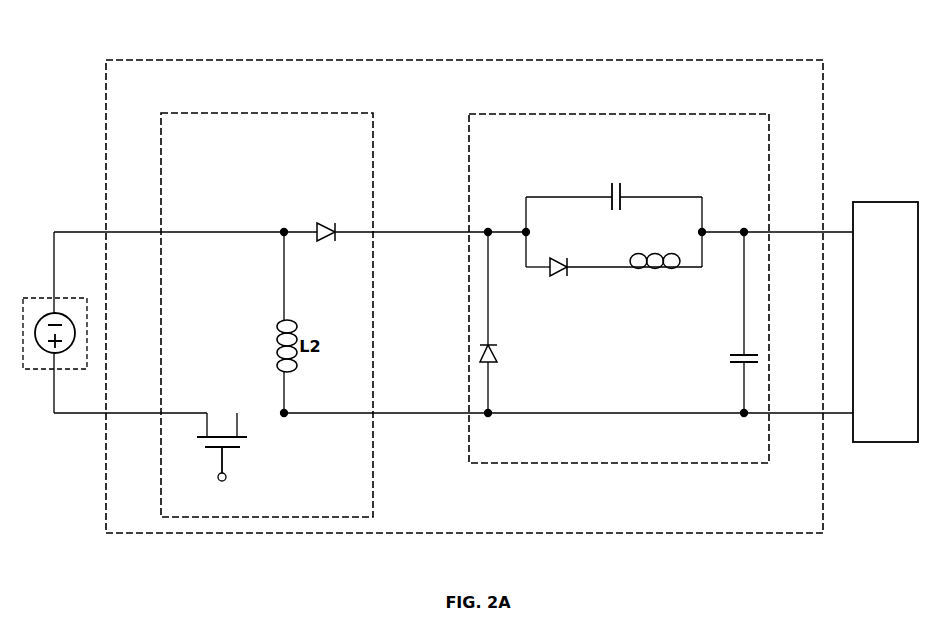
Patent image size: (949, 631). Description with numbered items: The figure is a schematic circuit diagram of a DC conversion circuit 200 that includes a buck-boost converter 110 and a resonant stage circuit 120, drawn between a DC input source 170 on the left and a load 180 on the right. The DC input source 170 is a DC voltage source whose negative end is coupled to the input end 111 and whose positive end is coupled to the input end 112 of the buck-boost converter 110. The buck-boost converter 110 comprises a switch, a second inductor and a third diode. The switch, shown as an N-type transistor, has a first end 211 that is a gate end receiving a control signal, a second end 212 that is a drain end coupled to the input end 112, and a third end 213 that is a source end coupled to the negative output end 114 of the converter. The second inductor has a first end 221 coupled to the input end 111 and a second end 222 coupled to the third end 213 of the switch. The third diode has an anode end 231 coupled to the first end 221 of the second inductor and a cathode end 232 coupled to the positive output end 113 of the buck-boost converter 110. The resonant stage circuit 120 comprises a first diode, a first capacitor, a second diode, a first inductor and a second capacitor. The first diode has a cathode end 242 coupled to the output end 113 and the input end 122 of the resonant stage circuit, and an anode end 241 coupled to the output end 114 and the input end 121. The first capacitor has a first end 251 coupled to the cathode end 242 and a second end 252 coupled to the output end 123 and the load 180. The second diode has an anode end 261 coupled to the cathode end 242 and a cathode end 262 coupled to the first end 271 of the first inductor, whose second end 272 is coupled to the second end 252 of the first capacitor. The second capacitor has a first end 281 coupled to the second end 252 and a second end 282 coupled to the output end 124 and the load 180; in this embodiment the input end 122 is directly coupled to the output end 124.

The DC conversion circuit 200 is at (708, 60).
The buck-boost converter 110 is at (236, 113).
The resonant stage circuit 120 is at (672, 114).
The DC input source 170 is at (40, 298).
The load 180 is at (880, 202).
The input end of the buck-boost converter 111 is at (136, 232).
The input end of the buck-boost converter 112 is at (138, 413).
The positive output end of the buck-boost converter 113 is at (392, 232).
The negative output end of the buck-boost converter 114 is at (402, 413).
The input end of the resonant stage circuit 121 is at (440, 232).
The input end of the resonant stage circuit 122 is at (440, 413).
The output end of the resonant stage circuit 123 is at (793, 232).
The output end of the resonant stage circuit 124 is at (790, 413).
The first end of the switch 211 is at (223, 459).
The second end of the switch 212 is at (191, 413).
The third end of the switch 213 is at (256, 413).
The first end of the second inductor 221 is at (285, 306).
The second end of the second inductor 222 is at (285, 389).
The anode end of the third diode 231 is at (307, 232).
The cathode end of the third diode 232 is at (346, 232).
The anode end of the first diode 241 is at (489, 380).
The cathode end of the first diode 242 is at (489, 332).
The first end of the first capacitor 251 is at (586, 197).
The second end of the first capacitor 252 is at (648, 197).
The anode end of the second diode 261 is at (535, 267).
The cathode end of the second diode 262 is at (582, 267).
The first end of the first inductor 271 is at (618, 267).
The second end of the first inductor 272 is at (693, 267).
The first end of the second capacitor 281 is at (744, 331).
The second end of the second capacitor 282 is at (744, 380).